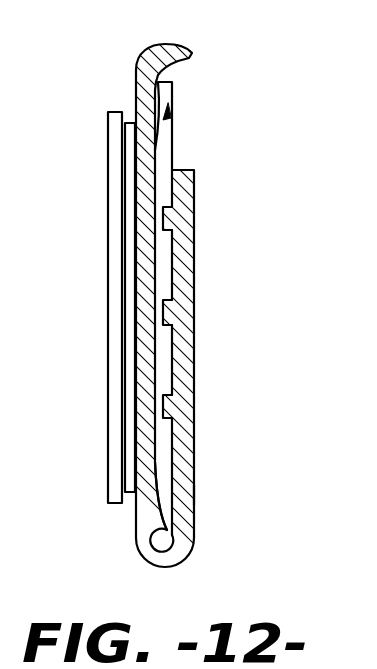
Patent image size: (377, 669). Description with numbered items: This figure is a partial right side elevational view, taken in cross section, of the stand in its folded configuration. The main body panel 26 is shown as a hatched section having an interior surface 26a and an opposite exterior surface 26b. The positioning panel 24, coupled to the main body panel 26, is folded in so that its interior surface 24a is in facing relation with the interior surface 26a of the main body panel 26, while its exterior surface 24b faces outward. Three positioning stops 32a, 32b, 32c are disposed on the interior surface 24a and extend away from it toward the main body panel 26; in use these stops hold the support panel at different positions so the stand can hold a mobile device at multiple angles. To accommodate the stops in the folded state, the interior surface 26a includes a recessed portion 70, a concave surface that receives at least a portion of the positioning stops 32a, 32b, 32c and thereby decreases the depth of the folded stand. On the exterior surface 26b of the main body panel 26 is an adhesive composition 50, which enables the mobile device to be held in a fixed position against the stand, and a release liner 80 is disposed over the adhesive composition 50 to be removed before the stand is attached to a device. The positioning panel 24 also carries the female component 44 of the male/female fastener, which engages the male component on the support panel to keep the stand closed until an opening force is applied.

The positioning panel 24 is at (180, 260).
The interior surface of positioning panel 24a is at (167, 172).
The exterior surface of positioning panel 24b is at (185, 455).
The main body panel 26 is at (146, 100).
The interior surface of main body panel 26a is at (158, 450).
The exterior surface of main body panel 26b is at (137, 90).
The first positioning stop 32a is at (165, 405).
The second positioning stop 32b is at (165, 310).
The third positioning stop 32c is at (165, 215).
The female component of fastener 44 is at (182, 494).
The adhesive composition 50 is at (130, 352).
The recessed portion 70 is at (170, 104).
The release liner 80 is at (113, 240).